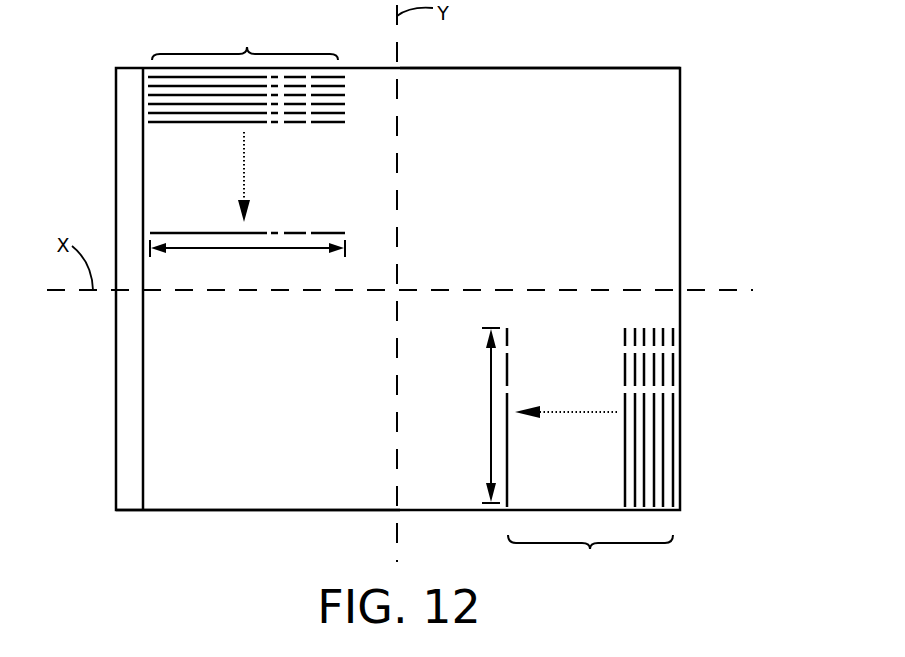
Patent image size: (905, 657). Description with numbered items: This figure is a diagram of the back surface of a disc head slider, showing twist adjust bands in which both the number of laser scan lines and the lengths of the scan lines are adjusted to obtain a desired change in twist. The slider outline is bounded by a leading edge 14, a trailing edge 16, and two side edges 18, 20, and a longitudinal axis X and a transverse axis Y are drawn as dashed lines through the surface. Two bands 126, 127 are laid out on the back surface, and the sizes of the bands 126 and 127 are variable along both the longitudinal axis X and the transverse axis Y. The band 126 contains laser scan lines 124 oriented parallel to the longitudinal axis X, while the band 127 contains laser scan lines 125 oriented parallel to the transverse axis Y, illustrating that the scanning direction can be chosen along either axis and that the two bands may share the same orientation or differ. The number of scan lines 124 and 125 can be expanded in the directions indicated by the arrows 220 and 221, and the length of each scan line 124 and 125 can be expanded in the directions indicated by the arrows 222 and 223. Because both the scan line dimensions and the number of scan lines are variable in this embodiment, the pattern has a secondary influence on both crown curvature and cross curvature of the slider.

The leading edge 14 is at (680, 175).
The trailing edge 16 is at (116, 420).
The side edge 18 is at (542, 68).
The side edge 20 is at (232, 510).
The laser scan lines 124 is at (223, 124).
The laser scan lines 125 is at (625, 445).
The band 126 is at (246, 97).
The band 127 is at (590, 453).
The arrow 220 is at (246, 165).
The arrow 221 is at (553, 412).
The arrow 222 is at (255, 252).
The arrow 223 is at (491, 423).